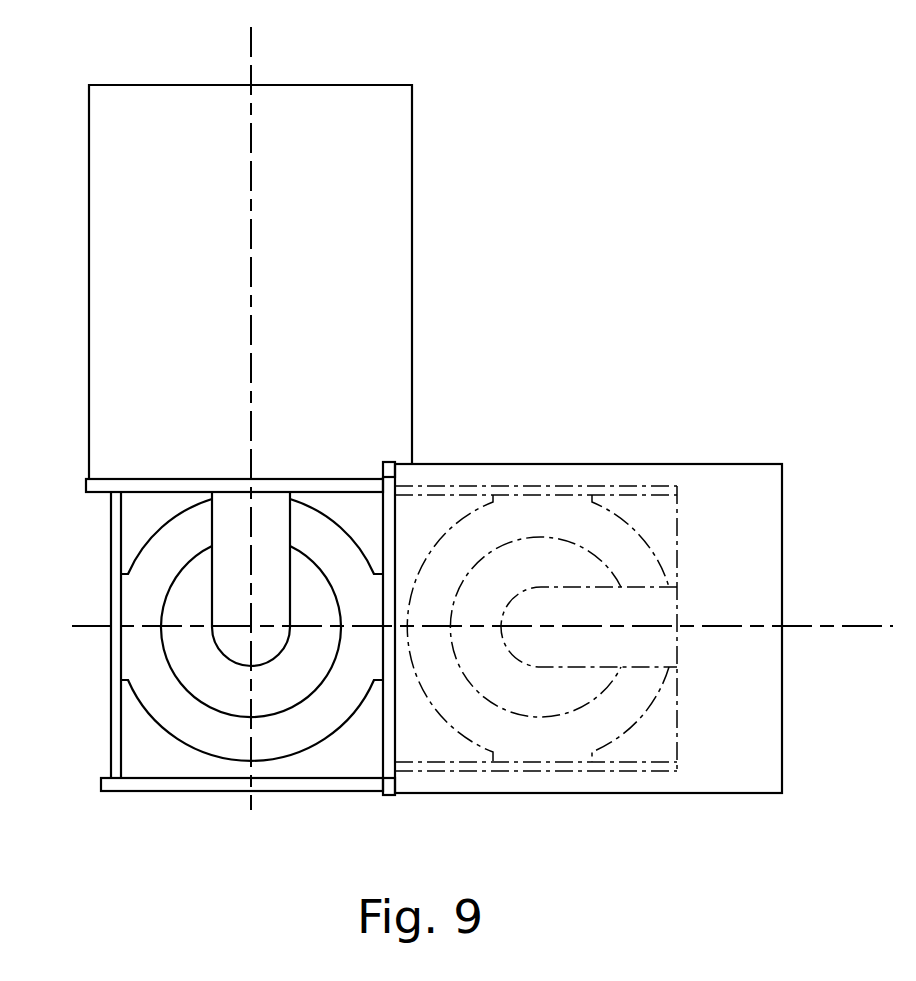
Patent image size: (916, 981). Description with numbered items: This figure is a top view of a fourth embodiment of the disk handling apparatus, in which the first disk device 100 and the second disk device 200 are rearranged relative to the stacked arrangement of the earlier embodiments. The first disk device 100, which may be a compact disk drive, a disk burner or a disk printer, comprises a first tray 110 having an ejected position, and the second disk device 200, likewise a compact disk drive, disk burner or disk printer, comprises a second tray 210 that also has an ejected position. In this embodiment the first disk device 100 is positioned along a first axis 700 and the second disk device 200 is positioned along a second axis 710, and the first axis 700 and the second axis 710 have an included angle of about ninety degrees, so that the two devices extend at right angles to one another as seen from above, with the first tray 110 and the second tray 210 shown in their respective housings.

The first disk device 100 is at (733, 759).
The first tray 110 is at (452, 743).
The second disk device 200 is at (378, 232).
The second tray 210 is at (149, 760).
The first axis 700 is at (879, 626).
The second axis 710 is at (251, 59).